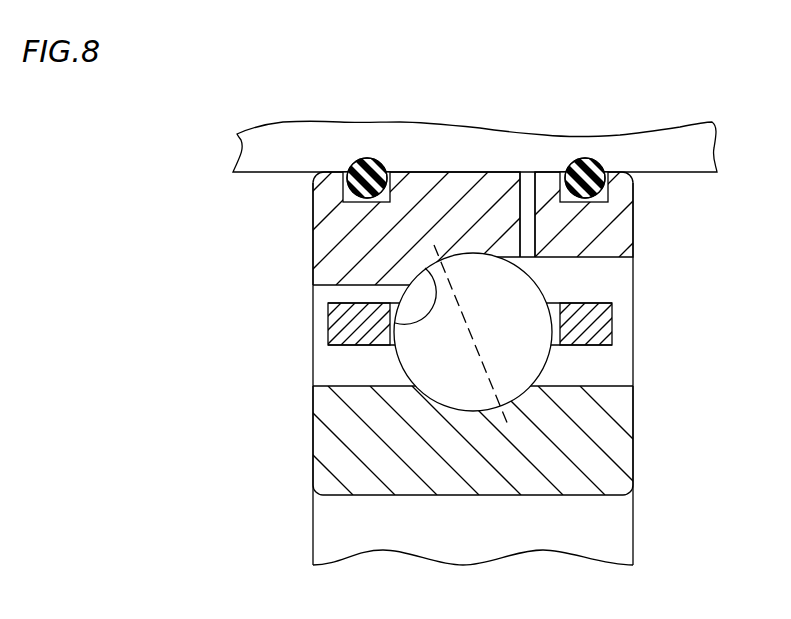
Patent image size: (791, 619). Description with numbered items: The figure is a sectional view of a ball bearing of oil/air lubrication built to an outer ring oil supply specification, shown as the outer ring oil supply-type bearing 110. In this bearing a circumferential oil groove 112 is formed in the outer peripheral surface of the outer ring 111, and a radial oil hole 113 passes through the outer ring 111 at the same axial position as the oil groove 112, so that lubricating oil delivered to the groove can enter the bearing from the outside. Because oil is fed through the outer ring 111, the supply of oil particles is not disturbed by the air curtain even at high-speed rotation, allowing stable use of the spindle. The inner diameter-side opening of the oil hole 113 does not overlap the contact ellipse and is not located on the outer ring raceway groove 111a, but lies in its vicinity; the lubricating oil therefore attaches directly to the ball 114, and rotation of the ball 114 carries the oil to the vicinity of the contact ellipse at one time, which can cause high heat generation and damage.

The outer ring oil supply-type bearing 110 is at (601, 89).
The outer ring 111 is at (350, 248).
The outer ring raceway groove 111a is at (353, 318).
The oil groove 112 is at (520, 172).
The oil hole 113 is at (528, 232).
The ball 114 is at (503, 305).